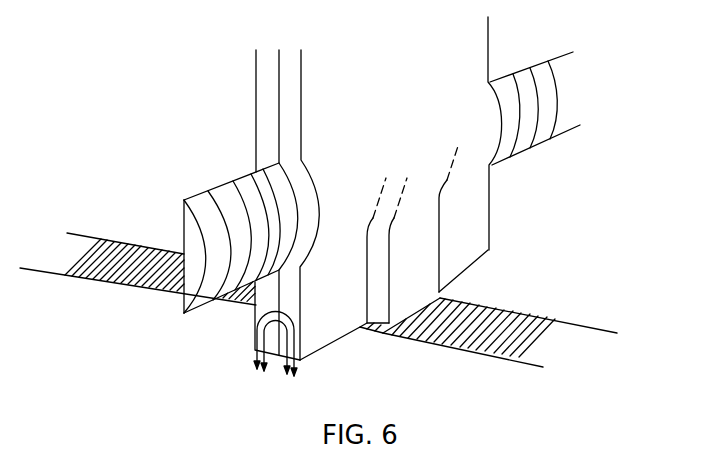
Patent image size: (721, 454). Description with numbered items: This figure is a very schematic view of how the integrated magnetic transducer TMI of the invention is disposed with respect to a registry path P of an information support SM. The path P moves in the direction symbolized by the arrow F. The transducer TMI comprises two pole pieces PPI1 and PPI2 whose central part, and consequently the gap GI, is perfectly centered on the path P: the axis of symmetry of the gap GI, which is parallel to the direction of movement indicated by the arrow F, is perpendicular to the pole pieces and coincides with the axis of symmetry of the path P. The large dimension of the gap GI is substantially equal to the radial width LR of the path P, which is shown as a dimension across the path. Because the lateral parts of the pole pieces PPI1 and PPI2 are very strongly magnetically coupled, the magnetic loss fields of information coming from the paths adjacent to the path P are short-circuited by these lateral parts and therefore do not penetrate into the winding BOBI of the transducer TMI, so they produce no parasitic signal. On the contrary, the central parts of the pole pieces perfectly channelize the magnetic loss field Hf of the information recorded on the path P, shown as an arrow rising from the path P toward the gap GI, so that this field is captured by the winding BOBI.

The integrated magnetic transducer TMI is at (243, 78).
The first pole piece PPI1 is at (256, 149).
The second pole piece PPI2 is at (302, 64).
The winding BOBI is at (545, 140).
The radial width of path LR is at (130, 228).
The magnetic field of loss Hf is at (414, 262).
The gap GI is at (444, 298).
The arrow indicating direction of movement F is at (528, 299).
The path P is at (519, 352).
The support SM is at (480, 354).